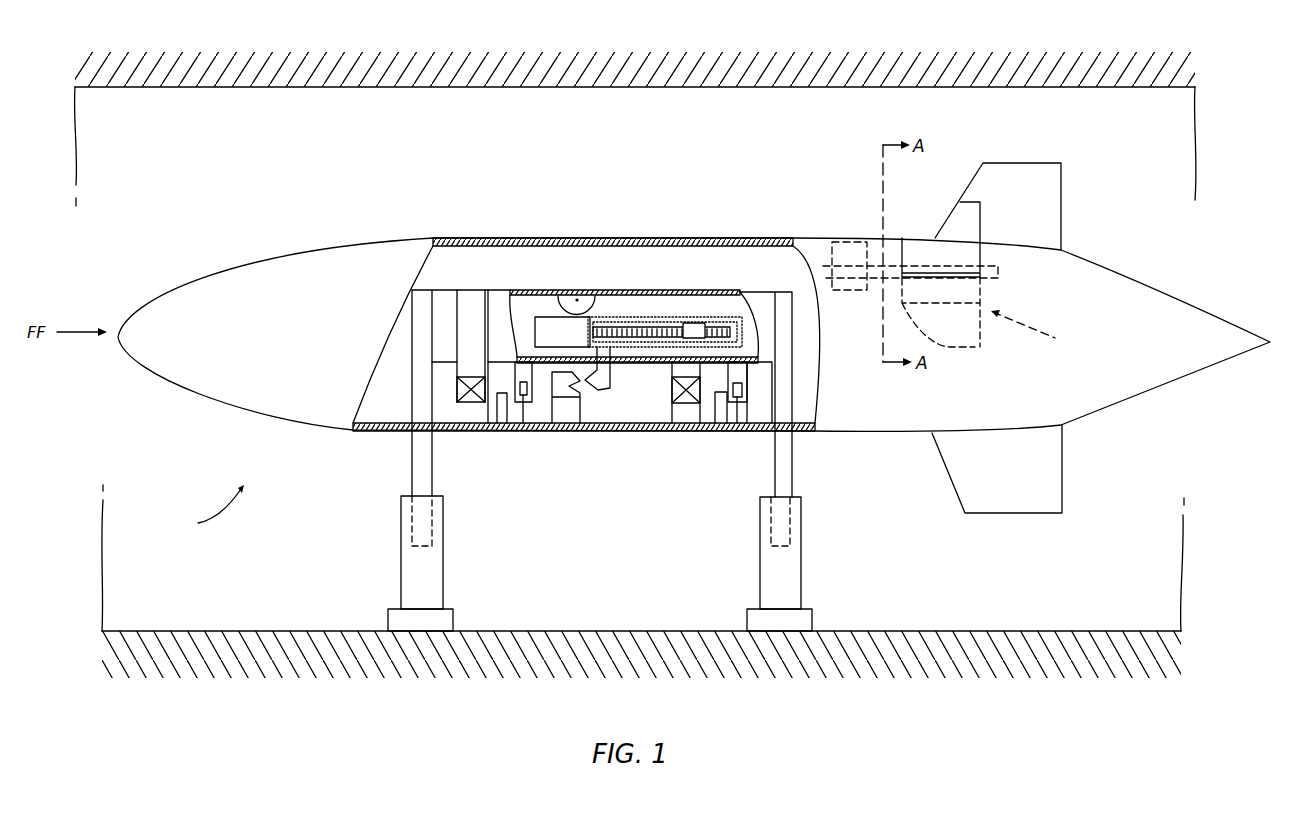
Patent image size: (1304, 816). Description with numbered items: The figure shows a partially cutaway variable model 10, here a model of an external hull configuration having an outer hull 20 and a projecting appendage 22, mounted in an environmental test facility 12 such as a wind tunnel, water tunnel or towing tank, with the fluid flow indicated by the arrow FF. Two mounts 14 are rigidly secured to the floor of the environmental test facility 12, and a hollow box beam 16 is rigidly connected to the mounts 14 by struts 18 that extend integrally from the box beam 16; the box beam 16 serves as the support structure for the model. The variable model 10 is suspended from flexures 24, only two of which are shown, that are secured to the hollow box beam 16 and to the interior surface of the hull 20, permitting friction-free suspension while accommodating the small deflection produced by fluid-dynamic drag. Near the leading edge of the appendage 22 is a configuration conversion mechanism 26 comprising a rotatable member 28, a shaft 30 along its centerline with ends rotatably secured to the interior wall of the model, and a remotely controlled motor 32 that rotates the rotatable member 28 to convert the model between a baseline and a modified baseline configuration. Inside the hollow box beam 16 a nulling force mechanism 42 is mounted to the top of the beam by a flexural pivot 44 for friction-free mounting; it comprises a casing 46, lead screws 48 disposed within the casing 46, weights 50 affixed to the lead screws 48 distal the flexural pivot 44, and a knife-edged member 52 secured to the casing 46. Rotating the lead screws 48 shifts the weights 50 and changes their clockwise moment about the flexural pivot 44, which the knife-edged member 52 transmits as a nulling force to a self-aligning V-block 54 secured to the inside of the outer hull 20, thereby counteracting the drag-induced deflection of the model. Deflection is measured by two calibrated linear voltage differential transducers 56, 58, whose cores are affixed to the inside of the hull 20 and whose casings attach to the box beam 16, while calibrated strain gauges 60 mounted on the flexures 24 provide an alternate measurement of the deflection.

The variable model 10 is at (206, 510).
The environmental test facility 12 is at (1025, 629).
The mounts 14 is at (410, 580).
The hollow box beam 16 is at (766, 302).
The struts 18 is at (412, 490).
The outer hull 20 is at (291, 264).
The appendage 22 is at (1052, 215).
The flexures 24 is at (463, 300).
The configuration conversion mechanism 26 is at (1036, 328).
The rotatable member 28 is at (973, 345).
The shaft 30 is at (891, 264).
The remotely controlled motor 32 is at (840, 247).
The nulling force mechanism 42 is at (596, 270).
The flexural pivot 44 is at (567, 297).
The casing 46 is at (530, 305).
The lead screws 48 is at (633, 322).
The weights 50 is at (697, 322).
The knife-edged member 52 is at (602, 433).
The self-aligning V-block 54 is at (582, 433).
The first linear voltage differential transducer 56 is at (523, 433).
The second linear voltage differential transducer 58 is at (727, 433).
The strain gauges 60 is at (476, 404).